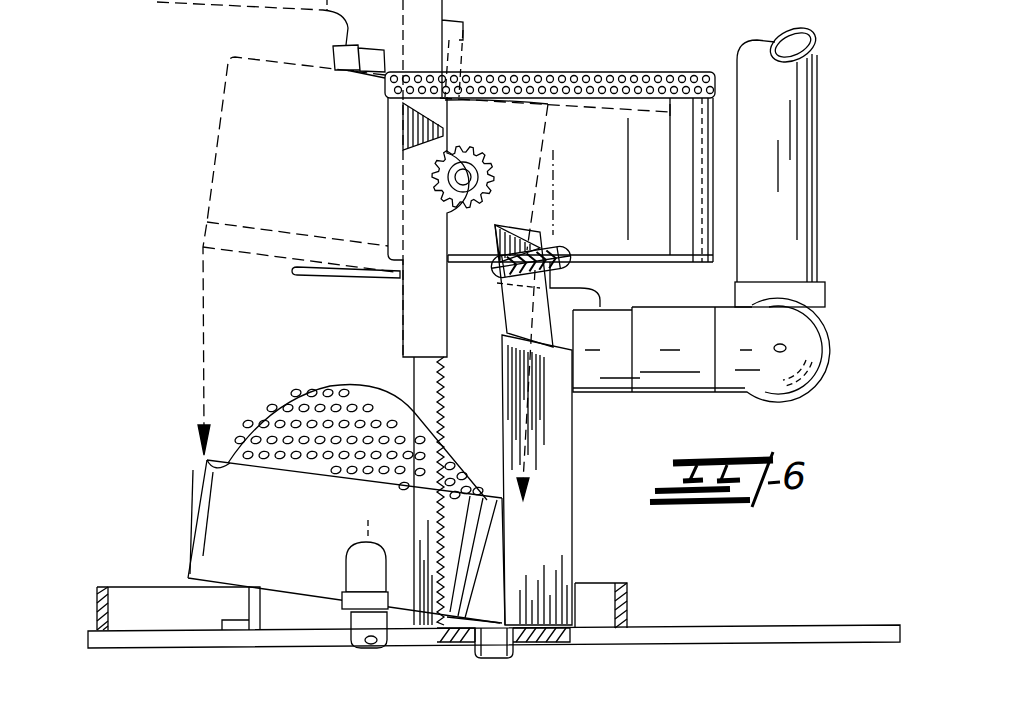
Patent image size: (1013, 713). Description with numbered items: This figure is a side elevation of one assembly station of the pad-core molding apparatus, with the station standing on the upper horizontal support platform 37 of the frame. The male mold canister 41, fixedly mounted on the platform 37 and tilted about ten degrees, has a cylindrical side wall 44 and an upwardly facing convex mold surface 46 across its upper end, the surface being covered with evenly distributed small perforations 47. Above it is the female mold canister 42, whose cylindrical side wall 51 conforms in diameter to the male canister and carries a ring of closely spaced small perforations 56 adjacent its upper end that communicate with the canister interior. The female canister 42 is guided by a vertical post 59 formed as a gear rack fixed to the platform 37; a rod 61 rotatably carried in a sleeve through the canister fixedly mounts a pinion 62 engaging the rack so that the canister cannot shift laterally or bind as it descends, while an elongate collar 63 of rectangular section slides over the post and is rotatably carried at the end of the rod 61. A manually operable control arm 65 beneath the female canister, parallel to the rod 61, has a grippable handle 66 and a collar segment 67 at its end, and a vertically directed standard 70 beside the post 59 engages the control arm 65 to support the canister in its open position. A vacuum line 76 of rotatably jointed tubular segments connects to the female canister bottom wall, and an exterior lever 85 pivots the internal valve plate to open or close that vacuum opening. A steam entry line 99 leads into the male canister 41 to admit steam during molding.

The upper horizontal support platform 37 is at (86, 632).
The male mold canister 41 is at (180, 528).
The female mold canister 42 is at (200, 135).
The cylindrical side wall 44 is at (300, 540).
The convex mold surface 46 is at (345, 358).
The perforations 47 is at (304, 412).
The cylindrical side wall 51 is at (612, 194).
The perforations 56 is at (645, 74).
The vertical post 59 is at (441, 380).
The rod 61 is at (463, 177).
The pinion 62 is at (489, 191).
The elongate collar 63 is at (405, 228).
The control arm 65 is at (488, 290).
The handle 66 is at (546, 252).
The collar segment 67 is at (548, 335).
The standard 70 is at (560, 496).
The vacuum line 76 is at (828, 125).
The lever 85 is at (332, 274).
The steam entry line 99 is at (350, 572).